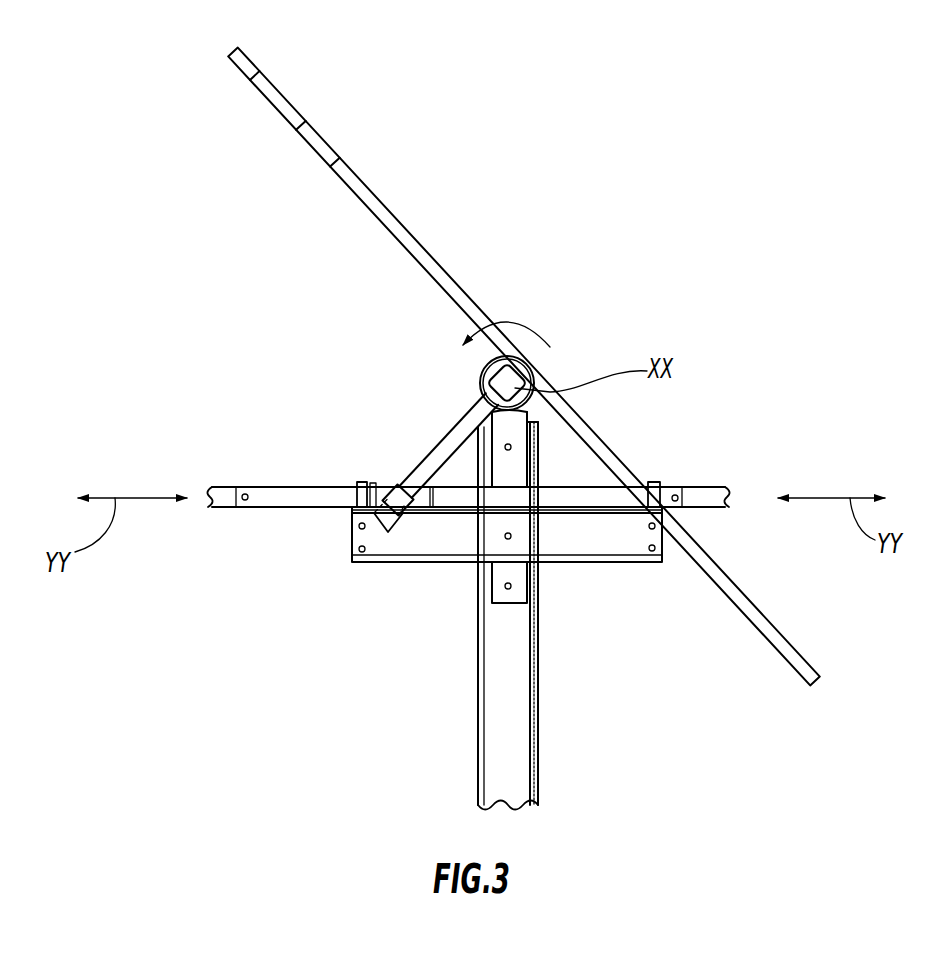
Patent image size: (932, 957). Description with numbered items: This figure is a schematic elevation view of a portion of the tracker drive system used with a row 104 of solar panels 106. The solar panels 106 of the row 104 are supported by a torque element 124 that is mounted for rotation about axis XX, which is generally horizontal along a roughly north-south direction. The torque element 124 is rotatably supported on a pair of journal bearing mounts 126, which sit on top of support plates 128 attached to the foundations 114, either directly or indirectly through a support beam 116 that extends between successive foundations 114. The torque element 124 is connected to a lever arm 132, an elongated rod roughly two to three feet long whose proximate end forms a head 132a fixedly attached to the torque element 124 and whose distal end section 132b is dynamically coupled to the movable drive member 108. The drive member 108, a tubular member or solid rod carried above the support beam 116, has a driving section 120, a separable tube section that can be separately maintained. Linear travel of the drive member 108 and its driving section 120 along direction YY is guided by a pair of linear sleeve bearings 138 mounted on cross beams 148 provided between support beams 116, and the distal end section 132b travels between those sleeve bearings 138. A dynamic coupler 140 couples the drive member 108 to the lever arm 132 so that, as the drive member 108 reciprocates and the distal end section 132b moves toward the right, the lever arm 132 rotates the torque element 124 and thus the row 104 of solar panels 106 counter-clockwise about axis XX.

The row 104 is at (212, 50).
The solar panels 106 is at (255, 66).
The drive member 108 is at (222, 492).
The foundations 114 is at (527, 716).
The support beam 116 is at (389, 552).
The driving section 120 is at (587, 490).
The torque element 124 is at (481, 376).
The journal bearing mounts 126 is at (540, 438).
The support plates 128 is at (512, 470).
The lever arm 132 is at (452, 430).
The head 132a is at (540, 384).
The distal end section 132b is at (407, 527).
The linear sleeve bearings 138 is at (356, 497).
The dynamic coupler 140 is at (397, 483).
The cross beams 148 is at (352, 511).